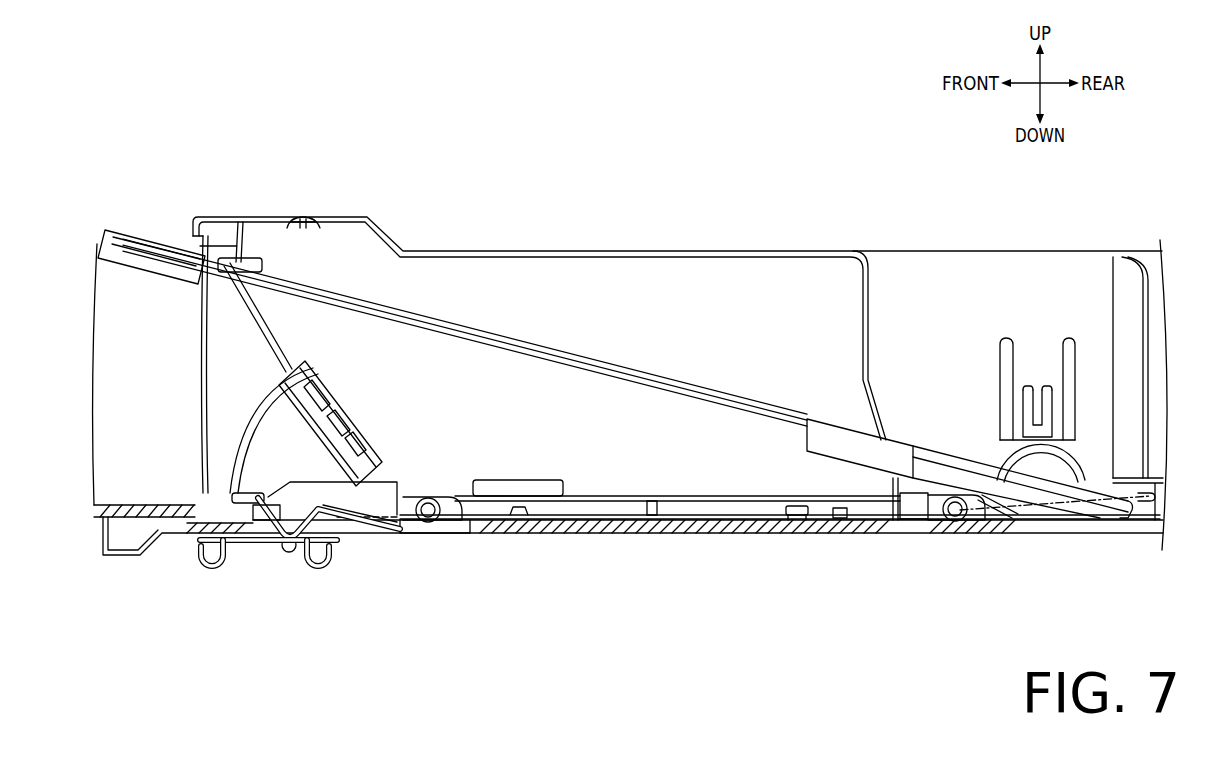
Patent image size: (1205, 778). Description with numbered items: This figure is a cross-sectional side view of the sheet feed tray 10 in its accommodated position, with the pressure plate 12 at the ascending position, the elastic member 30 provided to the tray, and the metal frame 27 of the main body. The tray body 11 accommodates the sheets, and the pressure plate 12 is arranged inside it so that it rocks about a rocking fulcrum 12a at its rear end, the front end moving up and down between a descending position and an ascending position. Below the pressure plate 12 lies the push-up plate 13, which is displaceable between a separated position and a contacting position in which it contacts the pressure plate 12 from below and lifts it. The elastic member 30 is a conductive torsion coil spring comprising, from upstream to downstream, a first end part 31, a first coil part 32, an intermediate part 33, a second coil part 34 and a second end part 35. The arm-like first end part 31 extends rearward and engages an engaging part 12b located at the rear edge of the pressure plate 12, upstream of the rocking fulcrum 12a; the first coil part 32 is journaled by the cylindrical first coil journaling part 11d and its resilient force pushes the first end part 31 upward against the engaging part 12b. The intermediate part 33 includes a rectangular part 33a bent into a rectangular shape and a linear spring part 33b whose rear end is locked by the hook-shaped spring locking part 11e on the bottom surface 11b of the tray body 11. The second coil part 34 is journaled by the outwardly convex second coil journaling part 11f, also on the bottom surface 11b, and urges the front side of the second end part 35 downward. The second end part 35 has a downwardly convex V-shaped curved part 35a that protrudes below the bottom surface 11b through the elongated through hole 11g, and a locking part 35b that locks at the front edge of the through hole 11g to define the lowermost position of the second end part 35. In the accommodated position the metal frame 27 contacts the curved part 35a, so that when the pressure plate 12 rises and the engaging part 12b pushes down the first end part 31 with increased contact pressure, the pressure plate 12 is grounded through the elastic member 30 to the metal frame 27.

The sheet feed tray 10 is at (596, 160).
The tray body 11 is at (910, 248).
The bottom surface 11b is at (644, 534).
The first coil journaling part 11d is at (935, 535).
The spring locking part 11e is at (790, 506).
The second coil journaling part 11f is at (426, 522).
The through hole 11g is at (255, 530).
The pressure plate 12 is at (430, 310).
The rocking fulcrum 12a is at (1045, 472).
The engaging part 12b is at (1129, 520).
The push-up plate 13 is at (270, 345).
The metal frame 27 is at (235, 545).
The elastic member 30 is at (690, 496).
The first end part 31 is at (1114, 512).
The first coil part 32 is at (953, 523).
The intermediate part 33 is at (854, 600).
The rectangular part 33a is at (857, 520).
The linear spring part 33b is at (798, 520).
The second coil part 34 is at (428, 495).
The second end part 35 is at (354, 474).
The curved part 35a is at (280, 540).
The locking part 35b is at (247, 493).